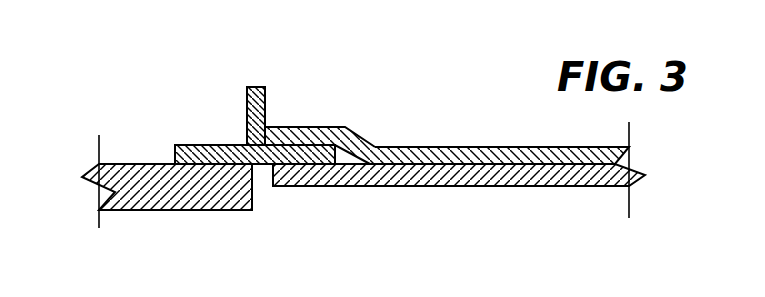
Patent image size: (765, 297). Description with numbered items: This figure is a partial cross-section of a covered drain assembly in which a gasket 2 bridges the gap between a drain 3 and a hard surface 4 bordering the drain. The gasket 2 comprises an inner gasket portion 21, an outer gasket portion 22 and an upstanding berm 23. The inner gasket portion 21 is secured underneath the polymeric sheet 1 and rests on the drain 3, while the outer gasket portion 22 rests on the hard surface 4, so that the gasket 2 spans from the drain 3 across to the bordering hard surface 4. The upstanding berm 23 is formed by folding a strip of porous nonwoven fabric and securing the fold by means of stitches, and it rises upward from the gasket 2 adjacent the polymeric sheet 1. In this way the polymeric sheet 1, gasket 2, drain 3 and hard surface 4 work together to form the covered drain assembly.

The polymeric sheet 1 is at (463, 147).
The gasket 2 is at (223, 76).
The drain 3 is at (461, 187).
The hard surface 4 is at (173, 212).
The inner gasket portion 21 is at (321, 128).
The outer gasket portion 22 is at (205, 144).
The upstanding berm 23 is at (259, 87).